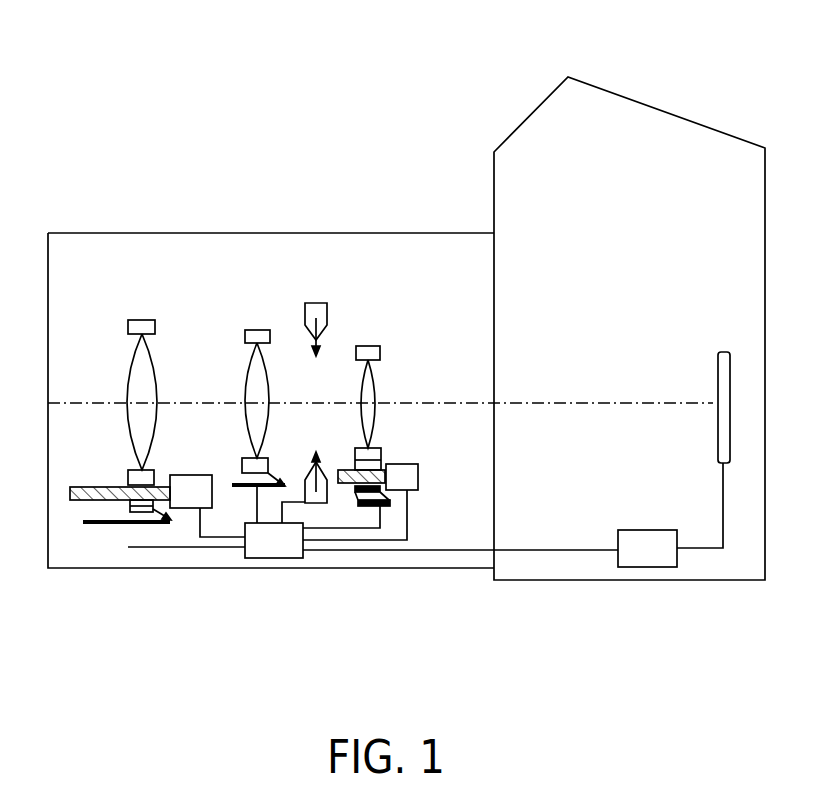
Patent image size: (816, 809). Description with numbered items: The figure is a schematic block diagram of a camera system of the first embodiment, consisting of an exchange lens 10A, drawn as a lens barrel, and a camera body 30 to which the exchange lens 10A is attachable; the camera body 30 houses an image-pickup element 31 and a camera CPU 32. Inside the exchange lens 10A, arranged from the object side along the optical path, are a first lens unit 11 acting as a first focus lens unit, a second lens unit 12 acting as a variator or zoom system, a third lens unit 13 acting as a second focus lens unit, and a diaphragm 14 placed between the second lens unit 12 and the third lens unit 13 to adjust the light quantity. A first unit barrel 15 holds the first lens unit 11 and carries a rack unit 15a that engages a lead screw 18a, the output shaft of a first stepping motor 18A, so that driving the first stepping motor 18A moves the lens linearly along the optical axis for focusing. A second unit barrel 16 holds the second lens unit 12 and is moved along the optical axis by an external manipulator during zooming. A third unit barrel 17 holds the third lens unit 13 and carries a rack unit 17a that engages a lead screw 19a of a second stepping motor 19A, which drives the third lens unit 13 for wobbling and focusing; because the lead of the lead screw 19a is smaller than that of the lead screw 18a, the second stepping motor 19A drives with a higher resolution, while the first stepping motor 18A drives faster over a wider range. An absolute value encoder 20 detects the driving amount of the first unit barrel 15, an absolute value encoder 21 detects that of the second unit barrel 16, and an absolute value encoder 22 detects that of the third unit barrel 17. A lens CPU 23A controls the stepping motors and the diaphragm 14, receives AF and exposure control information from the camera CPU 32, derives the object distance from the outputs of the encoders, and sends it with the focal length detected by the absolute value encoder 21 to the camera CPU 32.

The exchange lens 10A is at (192, 241).
The first lens unit 11 is at (131, 327).
The second lens unit 12 is at (244, 345).
The third lens unit 13 is at (364, 347).
The diaphragm 14 is at (306, 303).
The first unit barrel 15 is at (139, 320).
The second unit barrel 16 is at (256, 330).
The third unit barrel 17 is at (378, 348).
The lead screw 18a is at (90, 500).
The first stepping motor 18A is at (192, 508).
The rack unit 15a is at (131, 512).
The absolute value encoder 20 is at (148, 526).
The absolute value encoder 21 is at (236, 488).
The lens CPU 23A is at (272, 558).
The lead screw 19a is at (343, 485).
The second stepping motor 19A is at (418, 484).
The rack unit 17a is at (362, 490).
The absolute value encoder 22 is at (389, 501).
The camera body 30 is at (583, 142).
The image-pickup element 31 is at (723, 465).
The camera CPU 32 is at (647, 567).